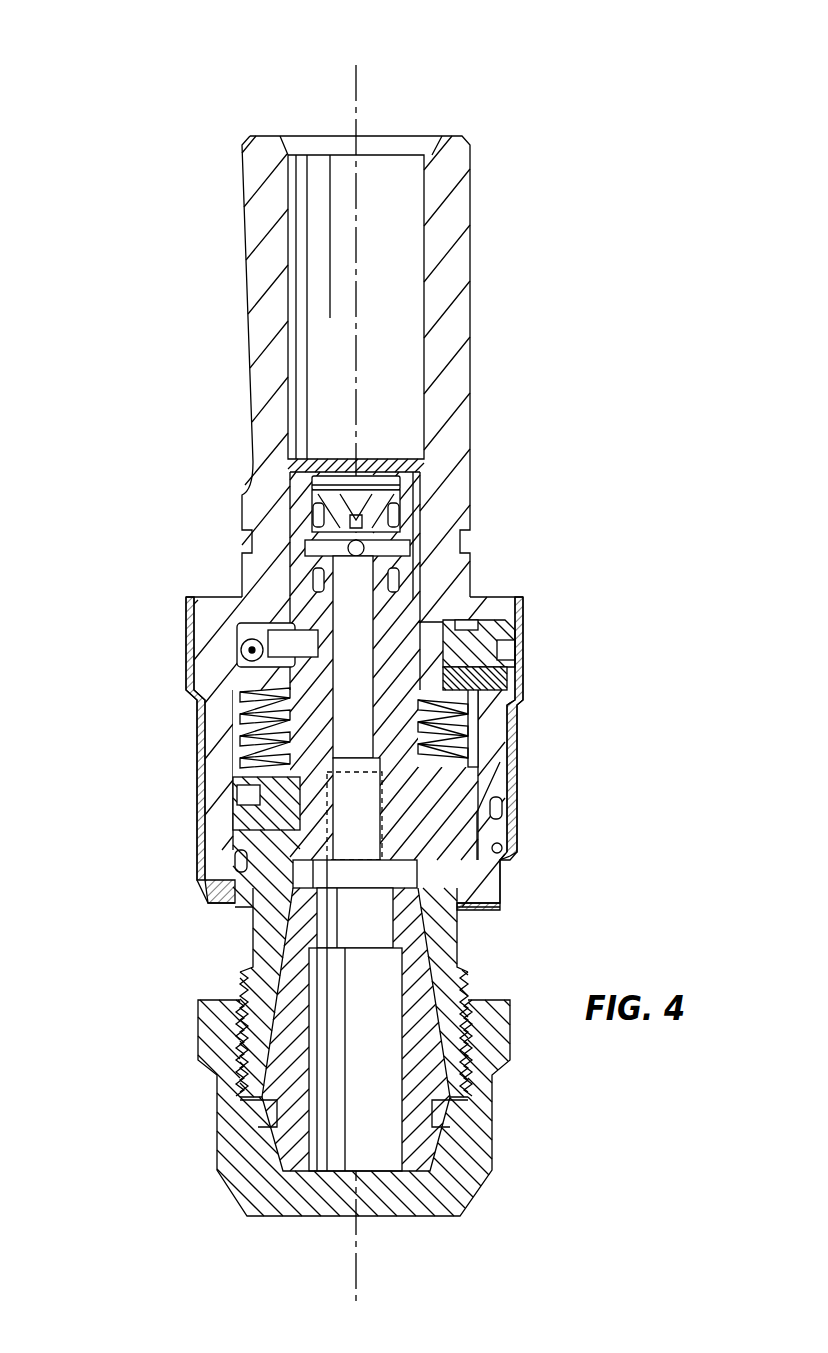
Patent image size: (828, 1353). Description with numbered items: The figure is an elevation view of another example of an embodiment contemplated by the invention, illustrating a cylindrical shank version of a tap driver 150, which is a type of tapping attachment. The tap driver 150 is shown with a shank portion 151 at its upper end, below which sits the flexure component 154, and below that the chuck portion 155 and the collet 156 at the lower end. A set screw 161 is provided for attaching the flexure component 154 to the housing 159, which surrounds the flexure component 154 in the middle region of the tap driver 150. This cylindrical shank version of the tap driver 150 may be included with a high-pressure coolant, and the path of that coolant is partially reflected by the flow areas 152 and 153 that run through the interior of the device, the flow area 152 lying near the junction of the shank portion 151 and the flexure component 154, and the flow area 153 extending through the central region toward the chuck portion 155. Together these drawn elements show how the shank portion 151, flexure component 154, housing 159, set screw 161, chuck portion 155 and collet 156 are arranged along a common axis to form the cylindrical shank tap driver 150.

The tap driver 150 is at (552, 113).
The shank portion 151 is at (448, 350).
The flow area 152 is at (300, 512).
The flow area 153 is at (363, 617).
The flexure component 154 is at (238, 732).
The chuck portion 155 is at (440, 928).
The collet 156 is at (418, 1138).
The housing 159 is at (493, 788).
The set screw 161 is at (507, 650).